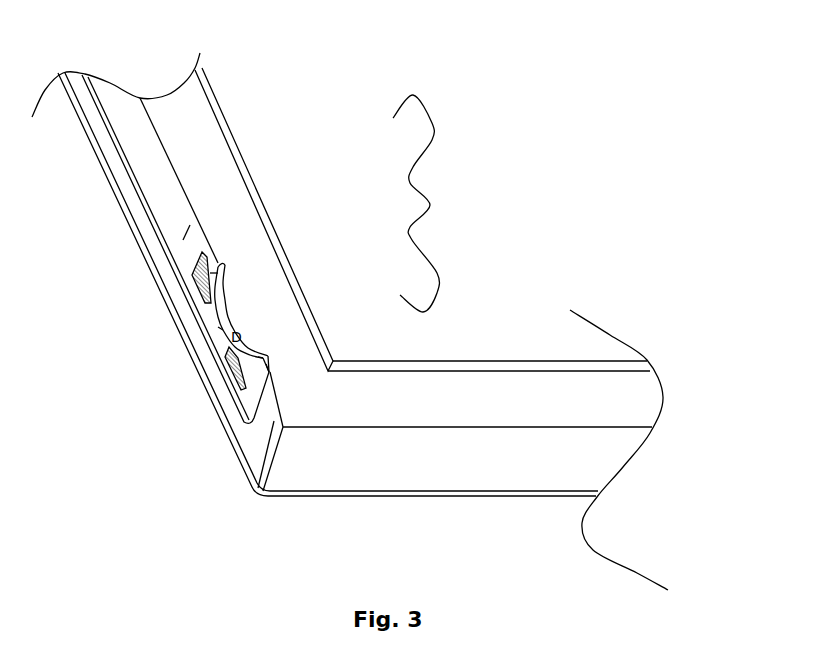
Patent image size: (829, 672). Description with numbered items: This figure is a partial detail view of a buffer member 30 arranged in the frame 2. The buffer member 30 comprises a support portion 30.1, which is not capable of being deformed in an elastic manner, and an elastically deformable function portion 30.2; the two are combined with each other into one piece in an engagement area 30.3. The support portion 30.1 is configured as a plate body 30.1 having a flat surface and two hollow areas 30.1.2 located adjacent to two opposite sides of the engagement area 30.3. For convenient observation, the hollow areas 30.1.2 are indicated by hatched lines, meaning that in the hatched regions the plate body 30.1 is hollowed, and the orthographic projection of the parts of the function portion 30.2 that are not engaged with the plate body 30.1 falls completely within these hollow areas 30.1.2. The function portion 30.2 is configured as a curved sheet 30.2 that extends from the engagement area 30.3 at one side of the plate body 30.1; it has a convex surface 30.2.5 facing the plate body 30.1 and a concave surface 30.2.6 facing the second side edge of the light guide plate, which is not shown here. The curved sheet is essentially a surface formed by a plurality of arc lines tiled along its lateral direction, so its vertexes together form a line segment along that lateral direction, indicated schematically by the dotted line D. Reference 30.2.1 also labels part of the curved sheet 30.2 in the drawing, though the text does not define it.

The frame 2 is at (207, 165).
The buffer member 30 is at (426, 203).
The support portion 30.1 is at (183, 240).
The hollow areas 30.1.2 is at (205, 283).
The function portion 30.2 is at (243, 348).
The retaining strip end portion 30.2.1 is at (268, 368).
The convex surface 30.2.5 is at (232, 374).
The concave surface 30.2.6 is at (262, 358).
The engagement area 30.3 is at (218, 327).